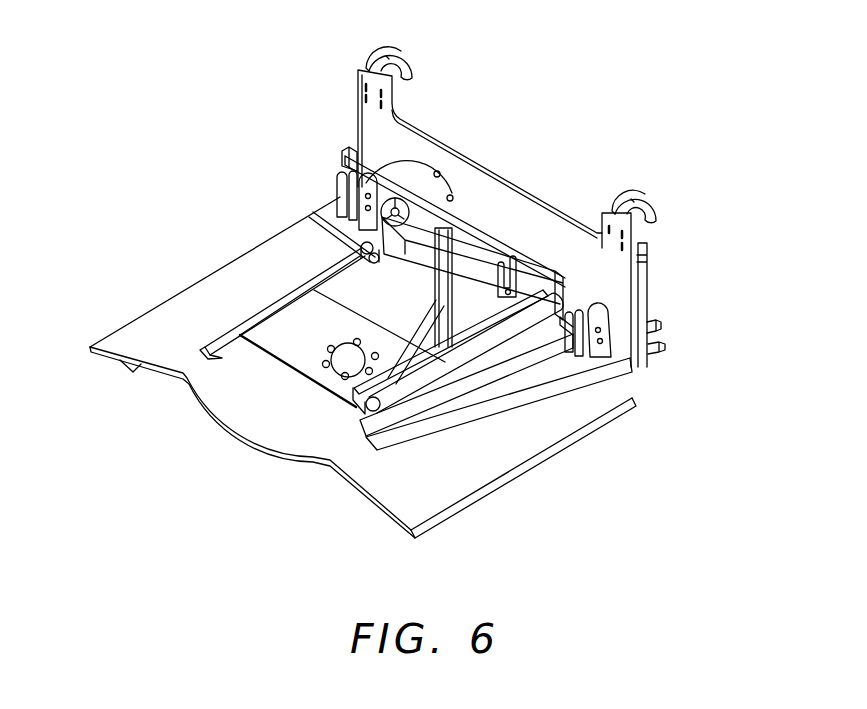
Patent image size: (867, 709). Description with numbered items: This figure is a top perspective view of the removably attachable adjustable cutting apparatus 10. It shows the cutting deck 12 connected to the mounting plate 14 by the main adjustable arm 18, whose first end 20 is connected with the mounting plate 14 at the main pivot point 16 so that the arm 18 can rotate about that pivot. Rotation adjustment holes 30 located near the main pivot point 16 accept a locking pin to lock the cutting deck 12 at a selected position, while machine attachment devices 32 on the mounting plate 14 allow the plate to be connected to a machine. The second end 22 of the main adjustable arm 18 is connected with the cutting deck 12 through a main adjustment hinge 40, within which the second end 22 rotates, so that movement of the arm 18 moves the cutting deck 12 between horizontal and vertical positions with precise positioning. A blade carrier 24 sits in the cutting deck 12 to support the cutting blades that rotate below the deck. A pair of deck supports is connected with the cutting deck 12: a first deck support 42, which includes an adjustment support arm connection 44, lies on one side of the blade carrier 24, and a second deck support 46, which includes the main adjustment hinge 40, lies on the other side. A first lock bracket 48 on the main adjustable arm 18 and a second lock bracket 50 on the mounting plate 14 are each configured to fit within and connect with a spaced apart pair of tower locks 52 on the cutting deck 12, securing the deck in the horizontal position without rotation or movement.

The removably attachable adjustable cutting apparatus 10 is at (122, 104).
The cutting deck 12 is at (260, 421).
The mounting plate 14 is at (617, 280).
The main pivot point 16 is at (398, 196).
The main adjustable arm 18 is at (459, 222).
The first end 20 is at (367, 157).
The second end 22 is at (495, 372).
The blade carrier 24 is at (274, 345).
The rotation adjustment holes 30 is at (440, 172).
The machine attachment devices 32 is at (418, 50).
The main adjustment hinge 40 is at (356, 406).
The first deck support 42 is at (232, 332).
The adjustment support arm connection 44 is at (368, 262).
The second deck support 46 is at (402, 428).
The first lock bracket 48 is at (347, 158).
The second lock bracket 50 is at (664, 350).
The tower locks 52 is at (337, 200).